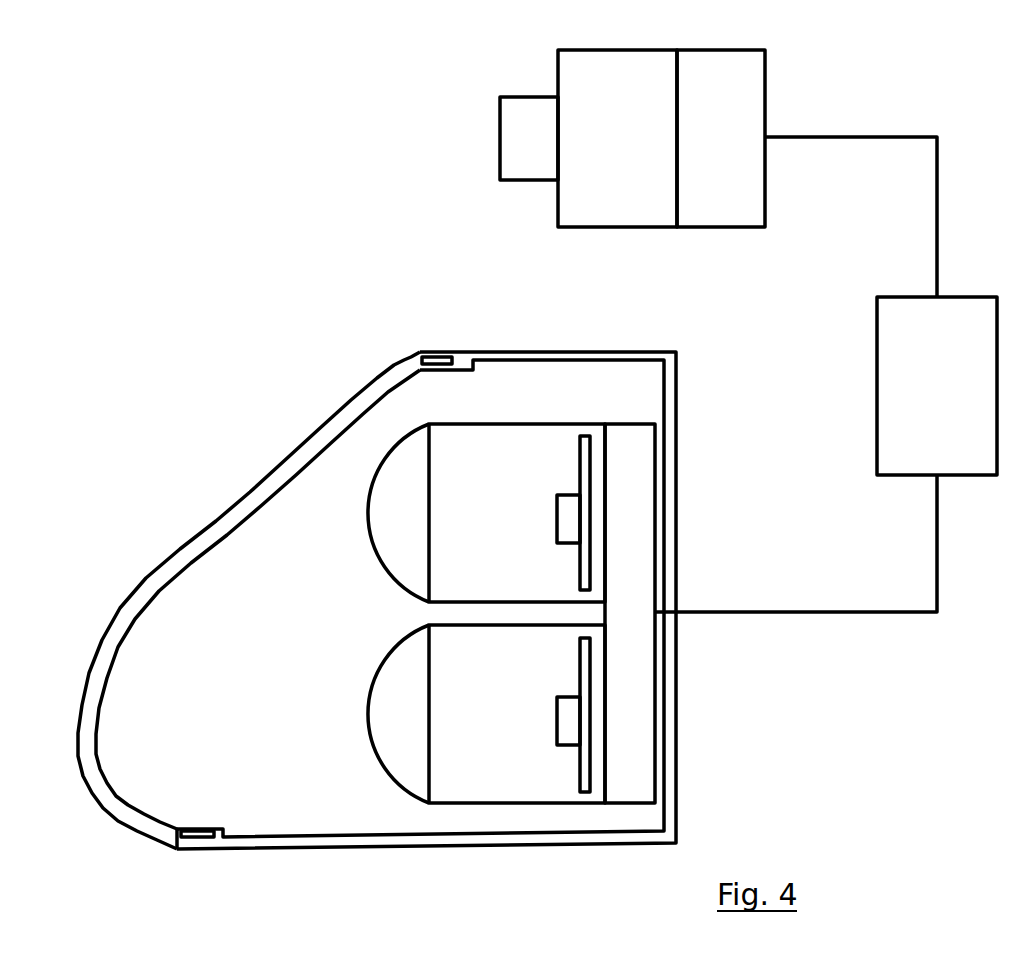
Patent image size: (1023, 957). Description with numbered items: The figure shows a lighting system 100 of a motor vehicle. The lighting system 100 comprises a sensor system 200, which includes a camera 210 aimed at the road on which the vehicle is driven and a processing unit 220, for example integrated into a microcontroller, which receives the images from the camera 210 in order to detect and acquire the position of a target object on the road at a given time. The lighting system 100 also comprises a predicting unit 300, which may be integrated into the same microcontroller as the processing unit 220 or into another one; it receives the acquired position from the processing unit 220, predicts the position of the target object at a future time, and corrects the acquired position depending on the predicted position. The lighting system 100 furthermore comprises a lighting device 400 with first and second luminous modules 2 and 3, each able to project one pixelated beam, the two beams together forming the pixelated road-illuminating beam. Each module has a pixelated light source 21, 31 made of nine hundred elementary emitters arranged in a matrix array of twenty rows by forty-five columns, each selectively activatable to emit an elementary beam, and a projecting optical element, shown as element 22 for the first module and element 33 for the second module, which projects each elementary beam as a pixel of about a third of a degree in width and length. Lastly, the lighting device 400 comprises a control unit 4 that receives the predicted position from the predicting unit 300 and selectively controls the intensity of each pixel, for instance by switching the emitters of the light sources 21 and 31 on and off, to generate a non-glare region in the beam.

The lighting system 100 is at (288, 203).
The lighting device 400 is at (311, 543).
The first luminous module 2 is at (461, 472).
The projecting optical element 22 is at (405, 470).
The pixelated light source 21 is at (570, 472).
The second luminous module 3 is at (463, 677).
The optics of second light module 33 is at (408, 766).
The pixelated light source 31 is at (573, 770).
The control unit 4 is at (641, 677).
The sensor system 200 is at (484, 76).
The camera 210 is at (645, 156).
The processing unit 220 is at (748, 156).
The predicting unit 300 is at (965, 405).